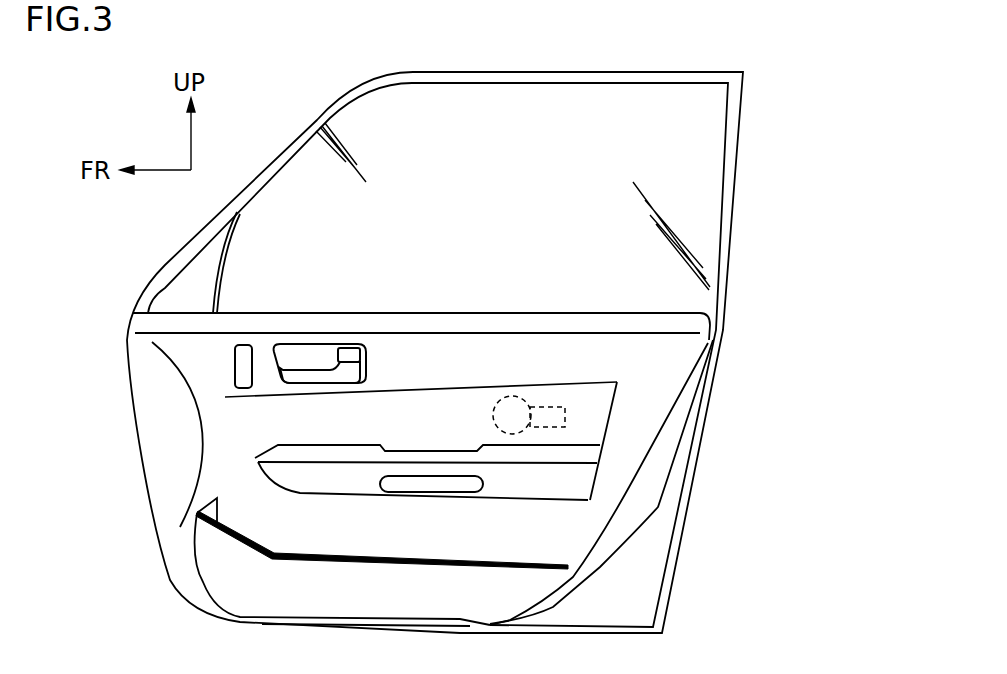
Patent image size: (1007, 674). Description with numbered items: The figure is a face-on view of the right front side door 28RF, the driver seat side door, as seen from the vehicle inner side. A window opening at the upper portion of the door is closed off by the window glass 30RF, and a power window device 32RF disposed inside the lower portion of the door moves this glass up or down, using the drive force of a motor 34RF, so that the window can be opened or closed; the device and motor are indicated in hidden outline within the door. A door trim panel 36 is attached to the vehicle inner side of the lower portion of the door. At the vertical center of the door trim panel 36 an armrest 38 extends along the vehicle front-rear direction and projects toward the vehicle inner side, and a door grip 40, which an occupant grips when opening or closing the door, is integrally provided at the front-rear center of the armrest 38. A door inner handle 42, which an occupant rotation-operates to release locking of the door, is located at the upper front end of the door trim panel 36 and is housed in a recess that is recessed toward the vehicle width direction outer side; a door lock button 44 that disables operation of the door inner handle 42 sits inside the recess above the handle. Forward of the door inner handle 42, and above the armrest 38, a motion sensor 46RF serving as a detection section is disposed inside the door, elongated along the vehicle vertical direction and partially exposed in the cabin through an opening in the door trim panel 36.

The right front side door 28RF is at (141, 266).
The window glass 30RF is at (686, 165).
The power window device 32RF is at (540, 407).
The motor 34RF is at (543, 341).
The door trim panel 36 is at (632, 425).
The armrest 38 is at (515, 485).
The door grip 40 is at (428, 457).
The door inner handle 42 is at (302, 378).
The door lock button 44 is at (350, 350).
The motion sensor 46RF is at (243, 345).